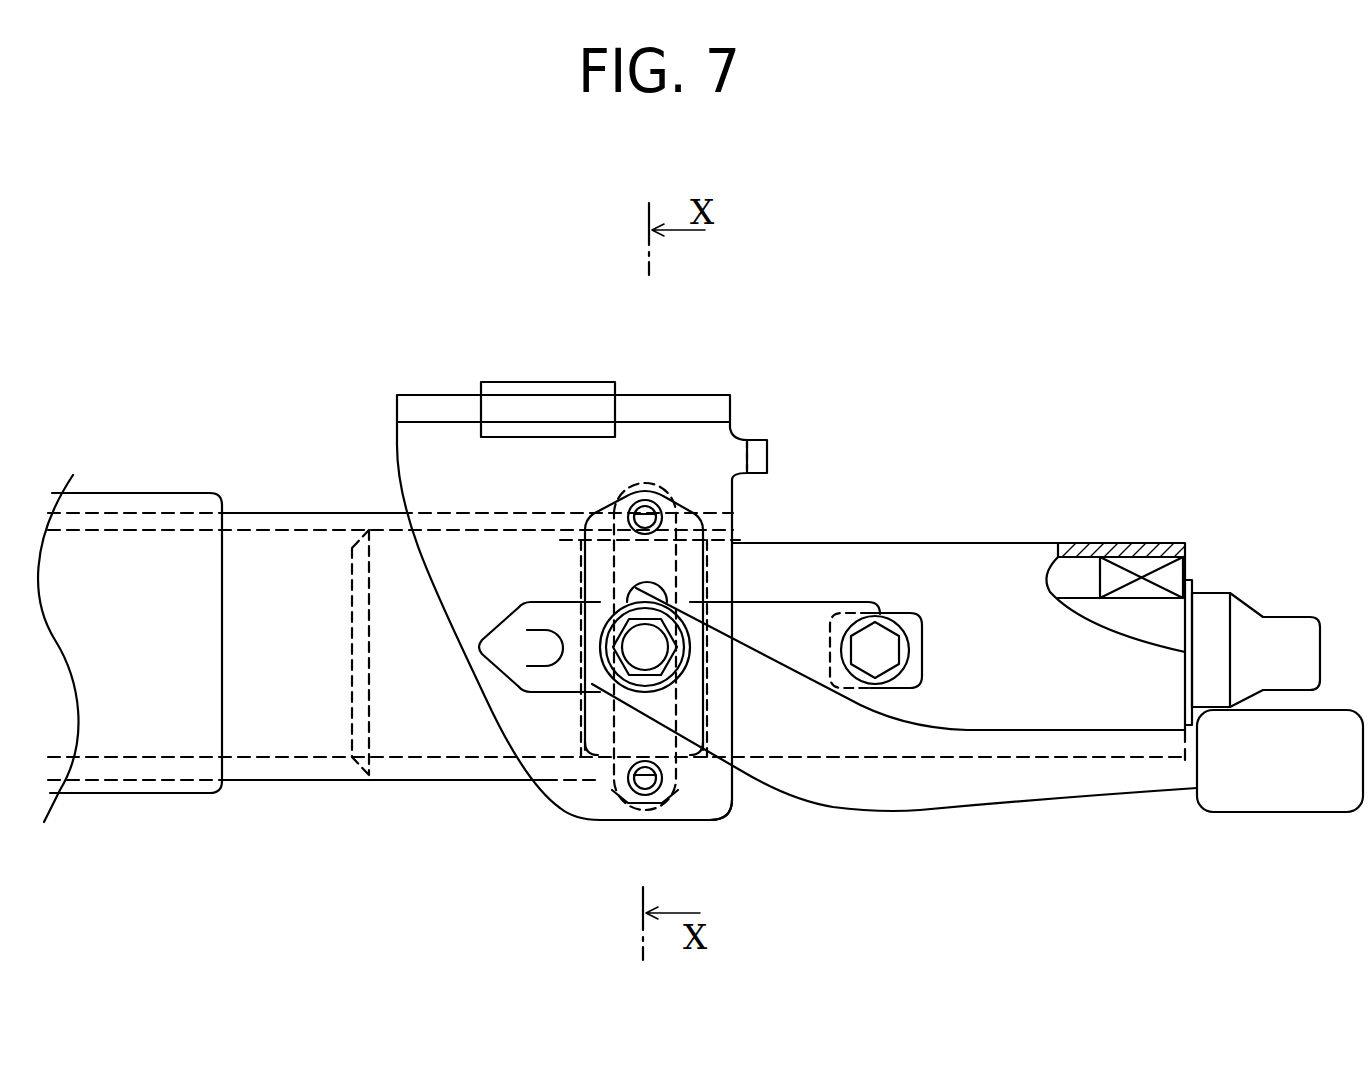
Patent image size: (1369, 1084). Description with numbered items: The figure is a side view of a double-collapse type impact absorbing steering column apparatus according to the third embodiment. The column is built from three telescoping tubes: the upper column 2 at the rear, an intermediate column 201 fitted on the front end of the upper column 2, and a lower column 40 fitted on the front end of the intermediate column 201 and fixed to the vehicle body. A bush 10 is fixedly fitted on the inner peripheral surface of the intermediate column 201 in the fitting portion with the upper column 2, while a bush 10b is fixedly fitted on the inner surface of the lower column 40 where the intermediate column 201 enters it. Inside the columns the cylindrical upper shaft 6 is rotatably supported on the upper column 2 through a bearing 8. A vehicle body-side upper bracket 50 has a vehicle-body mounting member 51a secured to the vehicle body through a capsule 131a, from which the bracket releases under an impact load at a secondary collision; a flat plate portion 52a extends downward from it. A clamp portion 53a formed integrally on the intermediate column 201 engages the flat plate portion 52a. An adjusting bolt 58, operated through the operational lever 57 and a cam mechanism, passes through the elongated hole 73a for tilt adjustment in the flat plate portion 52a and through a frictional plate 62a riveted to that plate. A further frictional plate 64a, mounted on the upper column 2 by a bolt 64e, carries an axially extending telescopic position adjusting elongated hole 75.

The upper column 2 is at (1000, 543).
The upper shaft 6 is at (1210, 593).
The bearing 8 is at (1137, 563).
The bush 10 is at (388, 528).
The bush 10b is at (190, 512).
The lower column 40 is at (181, 493).
The upper bracket 50 is at (716, 390).
The vehicle-body mounting member 51a is at (655, 400).
The opposite flat plate portion 52a is at (737, 433).
The clamp portion 53a is at (692, 797).
The operational lever 57 is at (812, 806).
The adjusting bolt 58 is at (660, 640).
The frictional plate 62a is at (643, 720).
The frictional plate 64a is at (803, 625).
The bolt 64e is at (873, 640).
The elongated hole for tilt adjustment 73a is at (630, 715).
The telescopic position adjusting elongated hole 75 is at (550, 650).
The capsule 131a is at (534, 392).
The intermediate column 201 is at (295, 513).